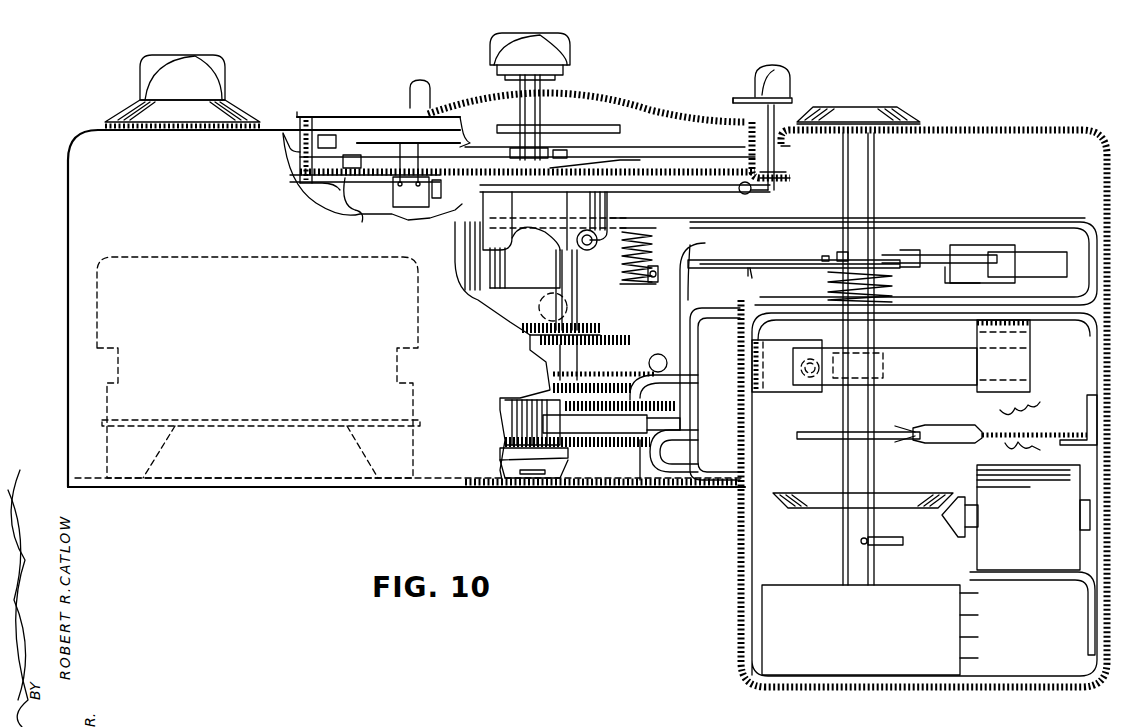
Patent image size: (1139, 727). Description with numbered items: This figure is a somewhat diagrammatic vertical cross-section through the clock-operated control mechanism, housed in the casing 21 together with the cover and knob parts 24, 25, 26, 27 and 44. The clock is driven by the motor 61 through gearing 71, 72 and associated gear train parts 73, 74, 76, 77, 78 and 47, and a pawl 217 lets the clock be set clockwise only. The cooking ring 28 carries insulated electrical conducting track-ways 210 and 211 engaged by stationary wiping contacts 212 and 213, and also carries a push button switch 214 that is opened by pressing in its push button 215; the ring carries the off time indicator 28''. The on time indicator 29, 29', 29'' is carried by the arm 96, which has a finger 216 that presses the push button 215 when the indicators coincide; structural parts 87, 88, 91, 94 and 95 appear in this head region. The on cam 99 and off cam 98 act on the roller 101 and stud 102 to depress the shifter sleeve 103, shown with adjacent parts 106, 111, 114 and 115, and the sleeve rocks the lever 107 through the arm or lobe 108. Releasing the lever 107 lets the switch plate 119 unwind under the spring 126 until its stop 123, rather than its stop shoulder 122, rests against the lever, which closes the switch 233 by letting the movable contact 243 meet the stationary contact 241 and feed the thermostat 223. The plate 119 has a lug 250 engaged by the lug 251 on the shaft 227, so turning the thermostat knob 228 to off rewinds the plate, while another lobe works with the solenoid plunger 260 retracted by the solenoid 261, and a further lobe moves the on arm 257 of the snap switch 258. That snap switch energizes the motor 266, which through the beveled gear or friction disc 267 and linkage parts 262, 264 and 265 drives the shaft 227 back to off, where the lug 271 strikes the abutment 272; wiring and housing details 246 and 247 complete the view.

The casing 21 is at (82, 150).
The cover dome 24 is at (600, 120).
The plate 25 is at (582, 122).
The knob 26 is at (566, 48).
The cover flange 27 is at (480, 104).
The cooking ring 28 is at (297, 131).
The off time indicator 28'' is at (424, 86).
The on time indicator 29 is at (774, 84).
The on time indicator 29' is at (776, 72).
The on time indicator 29'' is at (745, 84).
The knob 44 is at (152, 60).
The shaft 47 is at (478, 216).
The motor 61 is at (106, 256).
The gearing 71 is at (645, 480).
The gearing 72 is at (536, 475).
The gear 73 is at (548, 455).
The motor 74 is at (520, 458).
The shaft 76 is at (520, 137).
The tube 77 is at (680, 416).
The gear 78 is at (590, 352).
The bracket 87 is at (780, 172).
The cover plate 88 is at (527, 159).
The bearing 91 is at (500, 155).
The cover wall 94 is at (724, 130).
The arm 95 is at (306, 196).
The arm 96 is at (776, 158).
The off cam 98 is at (513, 203).
The on cam 99 is at (608, 206).
The roller 101 is at (593, 239).
The stud 102 is at (592, 246).
The shifter sleeve 103 is at (486, 296).
The frame wall 106 is at (512, 310).
The lever 107 is at (672, 319).
The arm or lobe 108 is at (580, 305).
The roller 111 is at (655, 380).
The spring 114 is at (658, 246).
The spring seat 115 is at (640, 282).
The switch plate 119 is at (780, 266).
The stop shoulder 122 is at (706, 270).
The stop 123 is at (755, 280).
The spring 126 is at (898, 292).
The electrical conducting track-way 210 is at (360, 137).
The electrical conducting track-way 211 is at (374, 176).
The stationary electrical wiping contact 212 is at (324, 134).
The stationary electrical wiping contact 213 is at (350, 168).
The push button switch 214 is at (410, 210).
The push button 215 is at (442, 188).
The finger 216 is at (748, 194).
The pawl 217 is at (596, 422).
The thermostat 223 is at (870, 630).
The shaft 227 is at (876, 180).
The thermostat control manipulating knob 228 is at (868, 110).
The switch 233 is at (934, 338).
The stationary contact 241 is at (780, 386).
The movable contact 243 is at (927, 380).
The wire 246 is at (360, 218).
The housing wall 247 is at (330, 208).
The lug 250 is at (912, 258).
The lug 251 is at (836, 252).
The on arm 257 is at (932, 258).
The snap switch 258 is at (1030, 256).
The solenoid plunger 260 is at (950, 284).
The solenoid 261 is at (975, 247).
The bar 262 is at (816, 440).
The wires 264 is at (960, 430).
The coupling 265 is at (968, 444).
The motor 266 is at (980, 553).
The beveled gear or friction disc 267 is at (835, 508).
The lug 271 is at (858, 541).
The abutment 272 is at (898, 536).